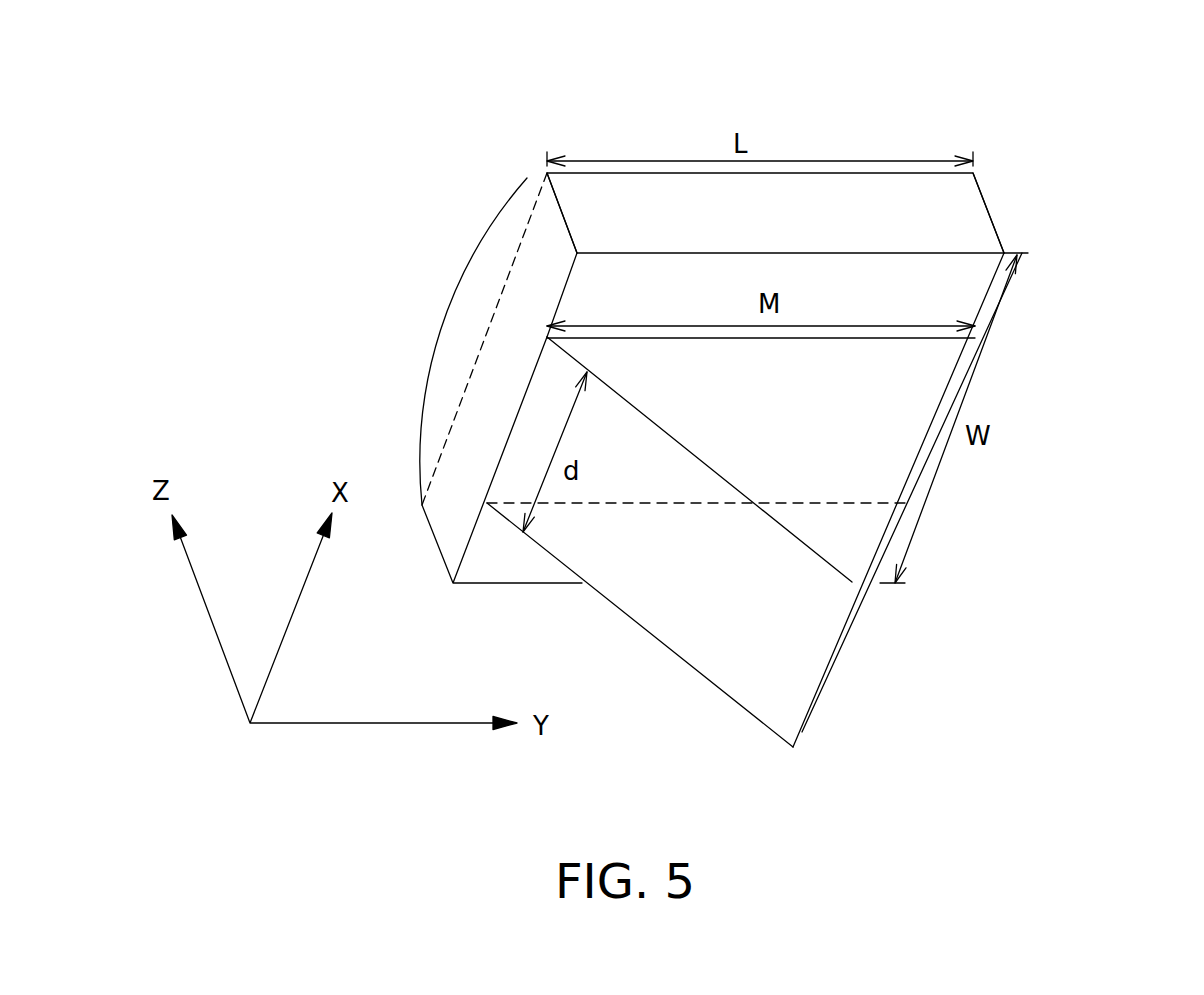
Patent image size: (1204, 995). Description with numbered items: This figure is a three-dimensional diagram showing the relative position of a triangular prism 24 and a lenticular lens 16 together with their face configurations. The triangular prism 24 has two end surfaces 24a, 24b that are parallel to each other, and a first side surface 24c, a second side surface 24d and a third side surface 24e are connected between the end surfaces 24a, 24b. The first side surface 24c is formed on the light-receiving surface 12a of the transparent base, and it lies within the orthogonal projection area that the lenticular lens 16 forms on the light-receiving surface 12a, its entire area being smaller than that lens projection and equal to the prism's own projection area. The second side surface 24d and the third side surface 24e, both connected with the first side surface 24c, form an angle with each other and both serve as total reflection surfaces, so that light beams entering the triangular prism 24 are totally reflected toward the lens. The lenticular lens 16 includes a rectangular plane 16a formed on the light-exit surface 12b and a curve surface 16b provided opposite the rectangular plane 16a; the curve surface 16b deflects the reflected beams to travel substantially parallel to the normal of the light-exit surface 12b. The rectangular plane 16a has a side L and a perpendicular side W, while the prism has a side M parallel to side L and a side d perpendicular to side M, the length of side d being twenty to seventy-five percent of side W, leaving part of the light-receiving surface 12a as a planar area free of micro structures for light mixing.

The light-receiving surface 12a is at (950, 310).
The light-exit surface 12b is at (527, 180).
The lenticular lens 16 is at (378, 315).
The rectangular plane 16a is at (488, 215).
The curve surface 16b is at (445, 318).
The triangular prism 24 is at (751, 447).
The end surface 24a is at (913, 460).
The end surface 24b is at (852, 625).
The first side surface 24c is at (758, 362).
The second side surface 24d is at (528, 437).
The third side surface 24e is at (897, 520).